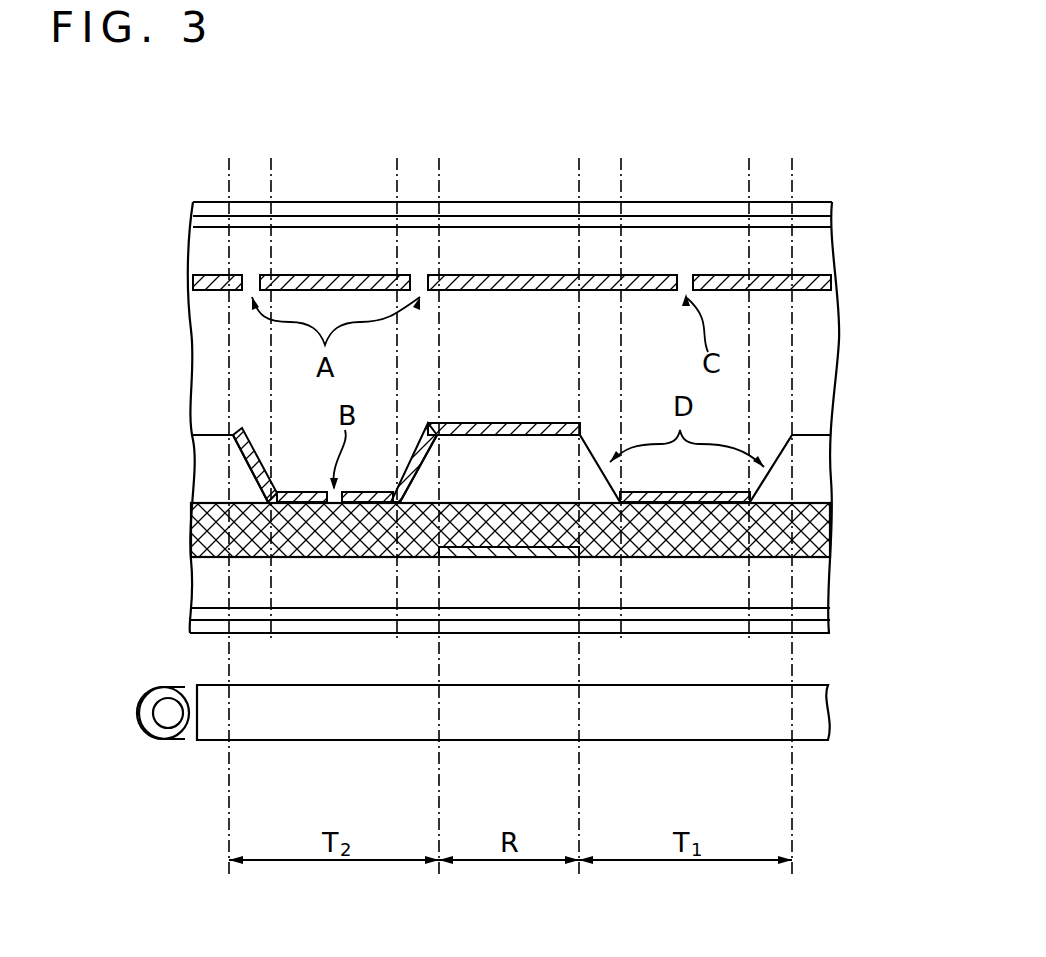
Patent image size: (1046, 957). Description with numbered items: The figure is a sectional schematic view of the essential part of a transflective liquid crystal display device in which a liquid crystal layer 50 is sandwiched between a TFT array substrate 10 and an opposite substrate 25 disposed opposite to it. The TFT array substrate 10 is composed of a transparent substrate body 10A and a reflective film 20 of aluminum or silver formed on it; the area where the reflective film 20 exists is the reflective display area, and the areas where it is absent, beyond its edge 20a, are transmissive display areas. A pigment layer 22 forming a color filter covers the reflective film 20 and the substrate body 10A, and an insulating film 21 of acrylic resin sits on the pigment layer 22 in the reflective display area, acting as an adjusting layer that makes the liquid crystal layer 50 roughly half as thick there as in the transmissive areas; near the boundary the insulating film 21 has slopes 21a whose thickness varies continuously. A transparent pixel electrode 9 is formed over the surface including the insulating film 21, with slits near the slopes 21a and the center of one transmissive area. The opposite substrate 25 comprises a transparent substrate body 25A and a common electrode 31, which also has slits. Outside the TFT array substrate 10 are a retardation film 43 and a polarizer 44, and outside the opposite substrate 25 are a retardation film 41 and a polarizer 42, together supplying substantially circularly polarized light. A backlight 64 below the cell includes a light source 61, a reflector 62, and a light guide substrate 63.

The polarizer 42 is at (663, 207).
The retardation film 41 is at (822, 220).
The opposite substrate 25 is at (188, 272).
The substrate body 25A is at (815, 247).
The common electrode 31 is at (812, 284).
The liquid crystal layer 50 is at (810, 338).
The insulating film 21 is at (822, 452).
The slope 21a is at (233, 433).
The pixel electrode 9 is at (242, 470).
The pigment layer 22 is at (822, 520).
The TFT array substrate 10 is at (160, 545).
The substrate body 10A is at (822, 588).
The retardation film 43 is at (822, 614).
The polarizer 44 is at (822, 627).
The reflective film 20 is at (503, 553).
The edge of light transmitting portion 20a is at (598, 555).
The light guide substrate 63 is at (770, 725).
The backlight 64 is at (135, 700).
The reflector 62 is at (148, 728).
The light source 61 is at (168, 720).